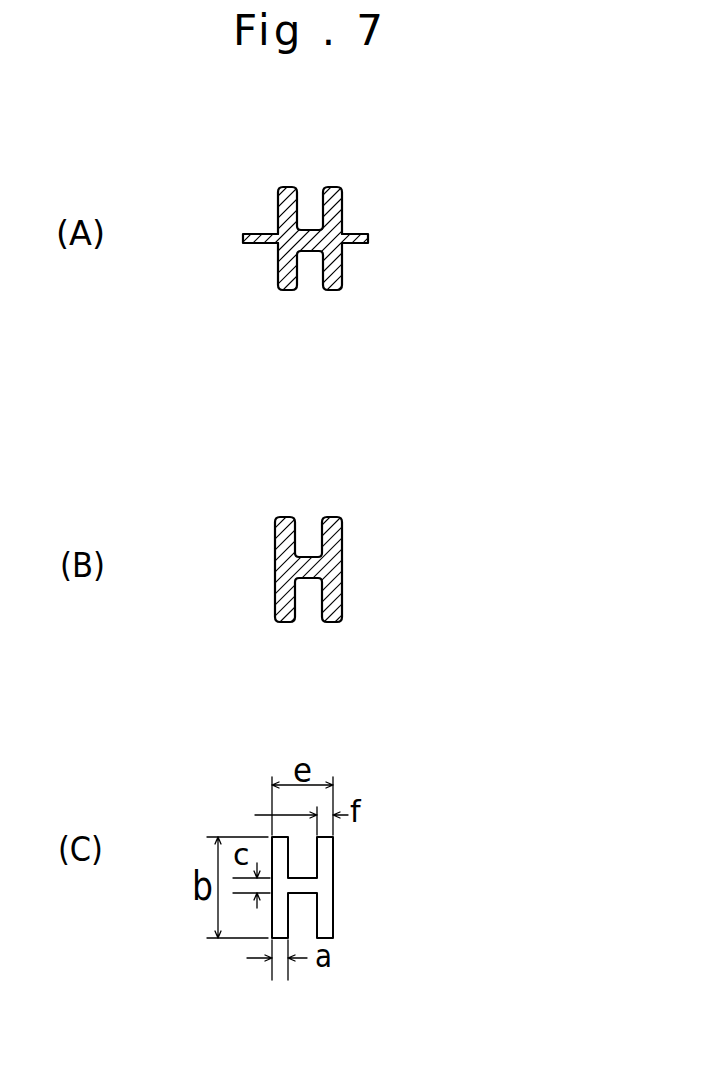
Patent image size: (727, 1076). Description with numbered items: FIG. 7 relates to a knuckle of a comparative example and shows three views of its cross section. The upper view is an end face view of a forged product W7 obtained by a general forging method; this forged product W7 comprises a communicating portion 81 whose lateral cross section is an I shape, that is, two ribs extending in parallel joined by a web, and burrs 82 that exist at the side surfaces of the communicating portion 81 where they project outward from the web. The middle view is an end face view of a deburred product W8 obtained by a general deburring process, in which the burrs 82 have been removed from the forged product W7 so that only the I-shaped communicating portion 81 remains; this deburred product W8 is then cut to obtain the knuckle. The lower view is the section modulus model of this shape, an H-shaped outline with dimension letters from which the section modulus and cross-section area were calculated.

The communicating portion 81 is at (333, 192).
The burrs 82 is at (355, 233).
The forged product W7 is at (234, 178).
The deburred product W8 is at (244, 513).